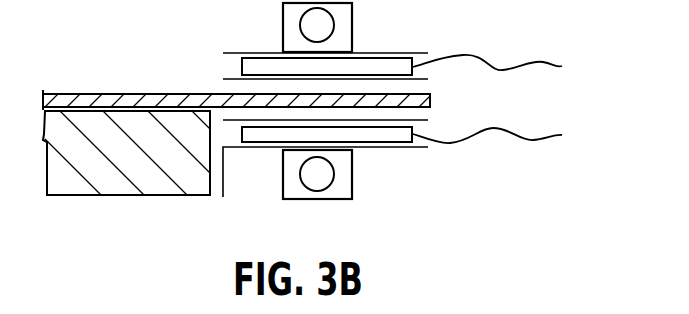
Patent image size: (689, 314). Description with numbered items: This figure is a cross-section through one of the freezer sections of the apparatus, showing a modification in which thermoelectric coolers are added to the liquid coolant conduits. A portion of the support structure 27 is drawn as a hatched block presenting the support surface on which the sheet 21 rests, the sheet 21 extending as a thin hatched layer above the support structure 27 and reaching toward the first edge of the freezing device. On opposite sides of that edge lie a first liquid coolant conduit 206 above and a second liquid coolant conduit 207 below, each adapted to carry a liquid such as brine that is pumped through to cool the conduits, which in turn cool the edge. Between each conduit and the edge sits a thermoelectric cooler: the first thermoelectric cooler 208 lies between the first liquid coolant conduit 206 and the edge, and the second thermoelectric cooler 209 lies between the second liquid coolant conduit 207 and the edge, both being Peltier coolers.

The sheet 21 is at (94, 93).
The support structure 27 is at (108, 195).
The first liquid coolant conduit 206 is at (334, 21).
The second liquid coolant conduit 207 is at (334, 170).
The first thermoelectric cooler 208 is at (430, 72).
The second thermoelectric cooler 209 is at (433, 130).